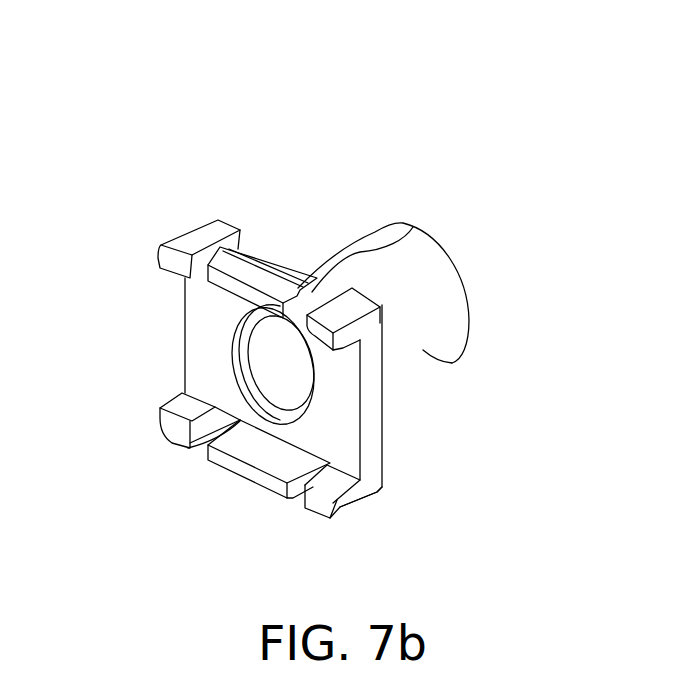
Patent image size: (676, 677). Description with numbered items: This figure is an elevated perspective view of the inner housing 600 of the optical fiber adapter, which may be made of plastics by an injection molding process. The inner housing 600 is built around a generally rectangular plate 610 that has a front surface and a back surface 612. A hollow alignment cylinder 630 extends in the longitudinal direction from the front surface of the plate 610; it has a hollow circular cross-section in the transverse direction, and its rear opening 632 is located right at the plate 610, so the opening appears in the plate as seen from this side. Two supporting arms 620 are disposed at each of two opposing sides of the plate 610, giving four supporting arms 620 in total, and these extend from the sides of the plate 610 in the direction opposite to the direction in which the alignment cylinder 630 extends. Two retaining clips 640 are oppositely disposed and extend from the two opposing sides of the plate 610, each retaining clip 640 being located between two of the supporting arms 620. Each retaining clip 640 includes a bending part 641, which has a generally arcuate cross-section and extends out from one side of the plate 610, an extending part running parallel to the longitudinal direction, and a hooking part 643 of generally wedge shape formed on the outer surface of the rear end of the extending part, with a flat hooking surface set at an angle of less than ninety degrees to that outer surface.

The inner housing 600 is at (263, 150).
The plate 610 is at (370, 408).
The back surface 612 is at (343, 433).
The supporting arm 620 is at (202, 243).
The alignment cylinder 630 is at (381, 400).
The rear opening 632 is at (290, 372).
The retaining clip 640 is at (272, 248).
The bending part 641 is at (413, 227).
The hooking part 643 is at (276, 275).